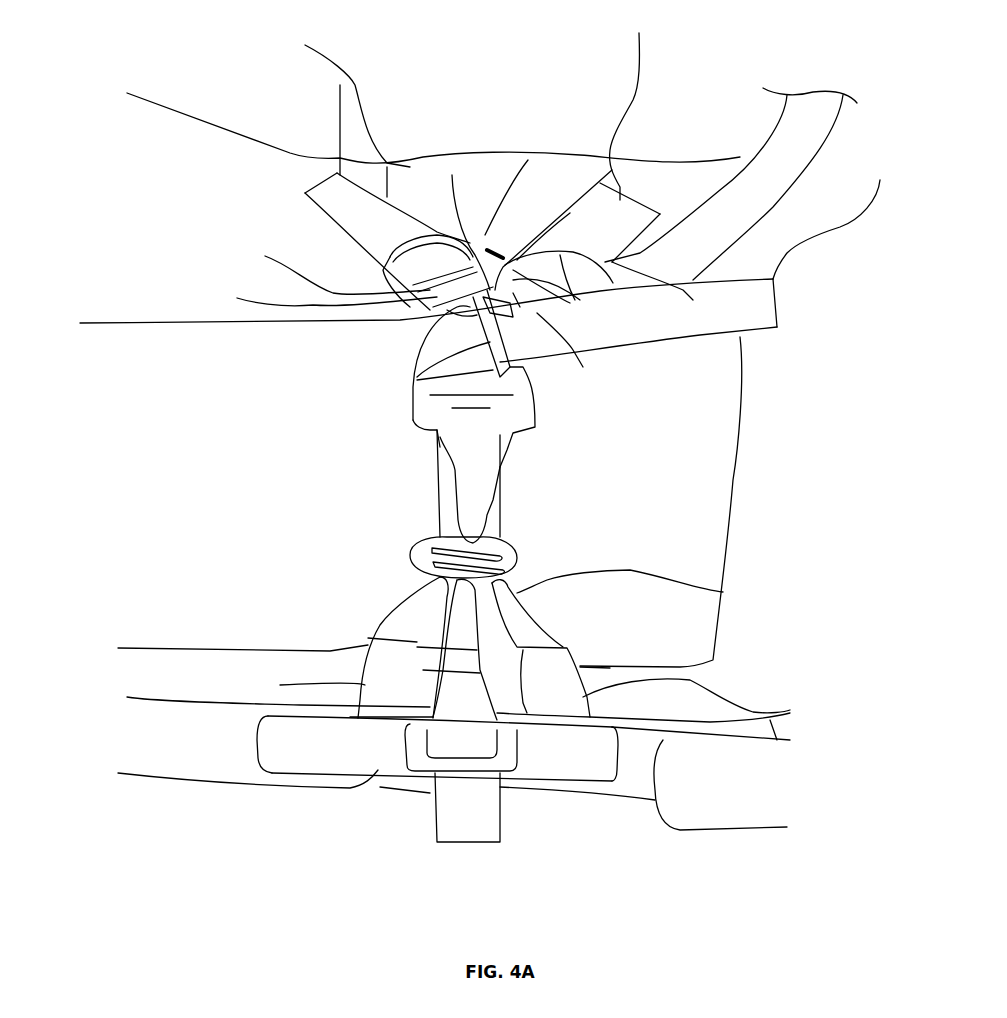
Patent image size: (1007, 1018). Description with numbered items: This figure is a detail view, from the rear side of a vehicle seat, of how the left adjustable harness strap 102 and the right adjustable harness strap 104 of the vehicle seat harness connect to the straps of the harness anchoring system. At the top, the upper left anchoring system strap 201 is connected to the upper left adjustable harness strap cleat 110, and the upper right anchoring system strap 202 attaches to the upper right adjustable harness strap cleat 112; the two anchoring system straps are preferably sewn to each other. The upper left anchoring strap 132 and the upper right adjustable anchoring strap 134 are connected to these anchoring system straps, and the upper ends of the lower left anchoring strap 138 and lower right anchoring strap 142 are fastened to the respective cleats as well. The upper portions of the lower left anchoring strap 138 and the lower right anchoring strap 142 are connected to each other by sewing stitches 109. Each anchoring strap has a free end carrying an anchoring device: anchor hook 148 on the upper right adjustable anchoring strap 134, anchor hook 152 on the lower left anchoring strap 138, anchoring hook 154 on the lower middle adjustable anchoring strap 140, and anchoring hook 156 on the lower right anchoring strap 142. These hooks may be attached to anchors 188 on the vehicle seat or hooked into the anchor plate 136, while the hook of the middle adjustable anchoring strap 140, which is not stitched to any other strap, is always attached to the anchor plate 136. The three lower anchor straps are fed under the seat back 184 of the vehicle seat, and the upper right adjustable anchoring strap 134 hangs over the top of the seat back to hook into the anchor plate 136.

The left adjustable harness strap 102 is at (340, 85).
The right adjustable harness strap 104 is at (587, 170).
The sewing stitches 109 is at (500, 285).
The upper left adjustable harness strap cleat 110 is at (265, 256).
The upper right adjustable harness strap cleat 112 is at (733, 337).
The upper left anchoring strap 132 is at (498, 510).
The upper right adjustable anchoring strap 134 is at (795, 143).
The anchor plate 136 is at (417, 550).
The lower left anchoring strap 138 is at (463, 177).
The lower middle adjustable anchoring strap 140 is at (453, 803).
The lower right anchoring strap 142 is at (543, 200).
The anchor hook 148 is at (470, 495).
The anchor hook 152 is at (420, 617).
The anchoring hook 154 is at (280, 685).
The anchoring hook 156 is at (723, 592).
The seat back 184 is at (733, 477).
The anchors 188 is at (376, 772).
The upper left anchoring system strap 201 is at (237, 298).
The upper right anchoring system strap 202 is at (583, 367).